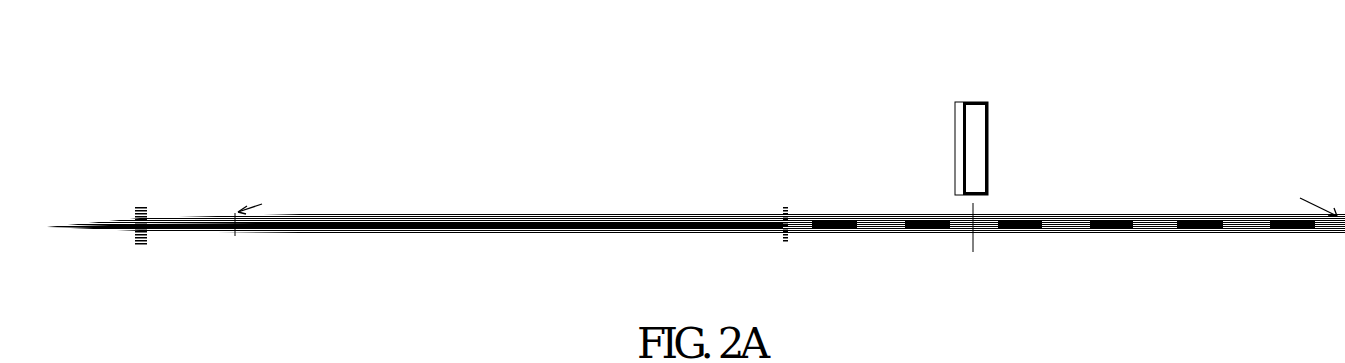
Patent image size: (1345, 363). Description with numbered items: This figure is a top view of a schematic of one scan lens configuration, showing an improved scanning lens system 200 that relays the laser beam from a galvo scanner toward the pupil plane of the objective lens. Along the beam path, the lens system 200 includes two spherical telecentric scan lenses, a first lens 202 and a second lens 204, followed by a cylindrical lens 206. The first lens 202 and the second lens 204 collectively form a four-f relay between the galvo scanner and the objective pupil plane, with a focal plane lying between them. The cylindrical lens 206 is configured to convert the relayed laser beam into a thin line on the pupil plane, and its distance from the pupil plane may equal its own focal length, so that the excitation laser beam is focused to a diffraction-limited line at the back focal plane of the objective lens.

The scanning lens system 200 is at (213, 105).
The first lens L1 202 is at (145, 243).
The second lens L2 204 is at (787, 242).
The cylindrical lens 206 is at (972, 213).